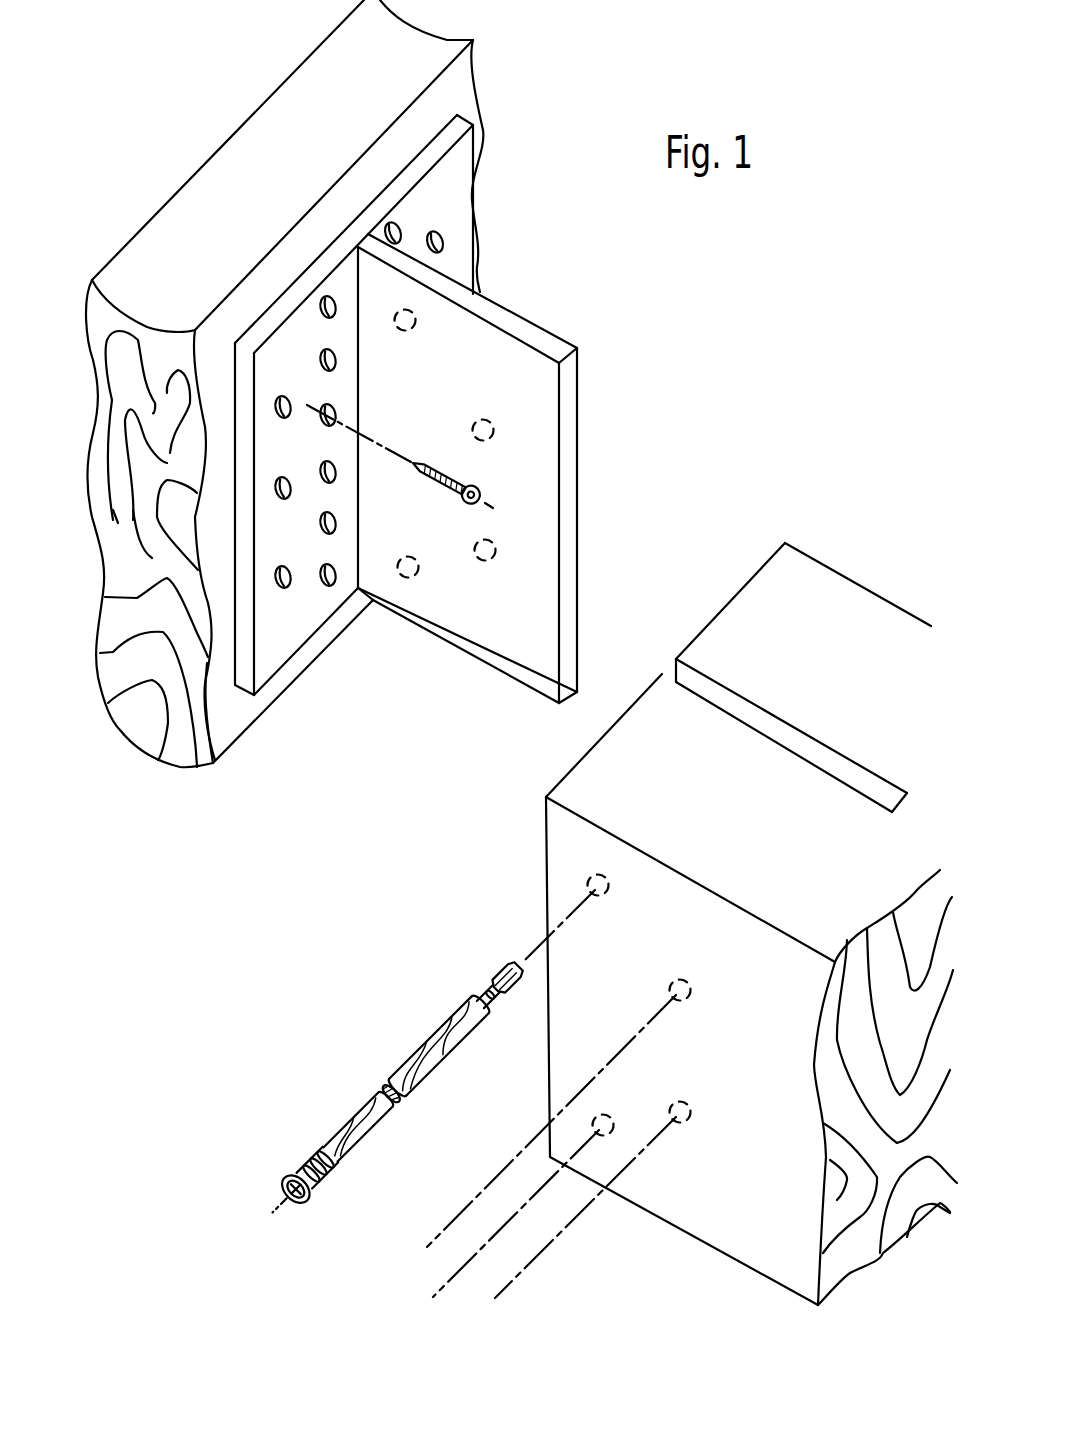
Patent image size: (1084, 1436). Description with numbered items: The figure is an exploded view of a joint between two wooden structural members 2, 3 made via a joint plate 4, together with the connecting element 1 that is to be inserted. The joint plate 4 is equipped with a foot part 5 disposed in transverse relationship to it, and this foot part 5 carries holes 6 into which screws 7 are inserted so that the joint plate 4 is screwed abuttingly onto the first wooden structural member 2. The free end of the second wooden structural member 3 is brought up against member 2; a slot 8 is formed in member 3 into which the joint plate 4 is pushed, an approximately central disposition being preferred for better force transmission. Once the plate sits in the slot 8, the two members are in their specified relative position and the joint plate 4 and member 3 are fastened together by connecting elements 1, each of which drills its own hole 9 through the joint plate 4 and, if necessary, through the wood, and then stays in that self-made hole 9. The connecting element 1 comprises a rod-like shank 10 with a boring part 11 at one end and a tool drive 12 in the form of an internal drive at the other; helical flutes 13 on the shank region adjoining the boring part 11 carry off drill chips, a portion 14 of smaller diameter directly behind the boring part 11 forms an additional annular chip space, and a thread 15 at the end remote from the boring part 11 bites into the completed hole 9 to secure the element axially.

The connecting element 1 is at (404, 1089).
The wooden structural member 2 is at (284, 383).
The wooden structural member 3 is at (751, 864).
The joint plate 4 is at (480, 362).
The foot part 5 is at (437, 192).
The holes 6 is at (287, 590).
The screws 7 is at (440, 487).
The slot 8 is at (773, 730).
The hole 9 is at (590, 884).
The shank 10 is at (440, 1043).
The boring part 11 is at (507, 963).
The tool drive 12 is at (299, 1210).
The flutes 13 is at (372, 1133).
The portion 14 is at (490, 1007).
The thread 15 is at (307, 1167).